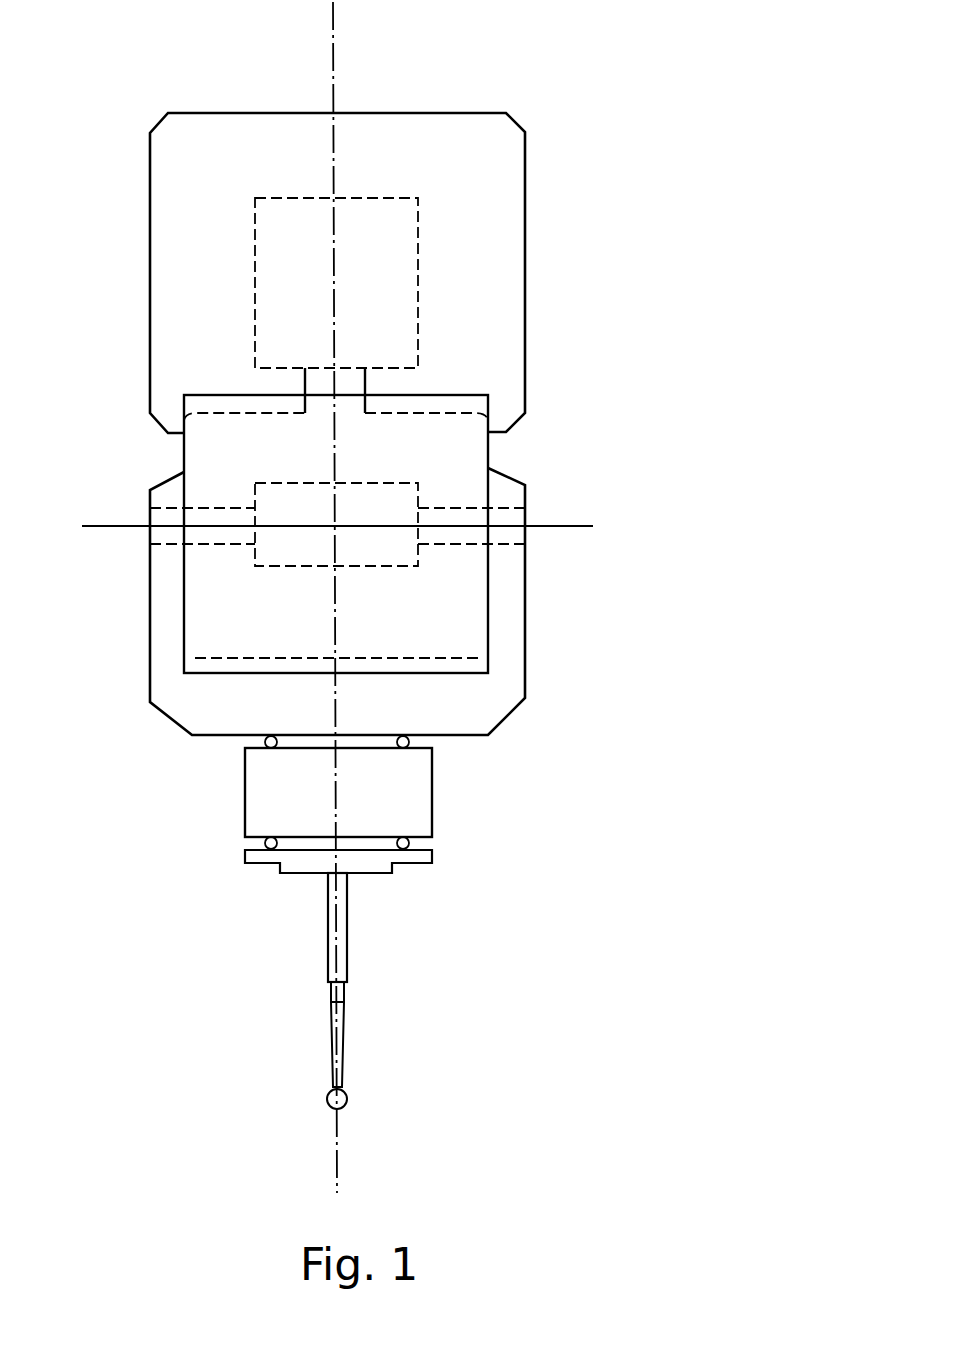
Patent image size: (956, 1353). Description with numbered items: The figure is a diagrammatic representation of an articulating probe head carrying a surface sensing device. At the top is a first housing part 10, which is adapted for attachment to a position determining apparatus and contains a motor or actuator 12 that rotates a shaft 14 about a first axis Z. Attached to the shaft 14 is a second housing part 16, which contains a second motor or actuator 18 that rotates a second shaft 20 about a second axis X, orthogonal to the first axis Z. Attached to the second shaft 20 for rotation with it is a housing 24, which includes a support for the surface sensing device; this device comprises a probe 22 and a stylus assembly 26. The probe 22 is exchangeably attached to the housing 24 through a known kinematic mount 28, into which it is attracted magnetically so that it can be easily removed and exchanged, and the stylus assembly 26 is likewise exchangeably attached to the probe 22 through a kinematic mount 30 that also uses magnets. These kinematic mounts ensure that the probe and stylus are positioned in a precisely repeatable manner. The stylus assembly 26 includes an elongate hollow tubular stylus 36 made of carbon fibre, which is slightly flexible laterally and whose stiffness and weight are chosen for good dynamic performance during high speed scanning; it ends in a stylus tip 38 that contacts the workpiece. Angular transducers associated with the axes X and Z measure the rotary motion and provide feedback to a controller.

The first housing part 10 is at (525, 225).
The motor or actuator 12 is at (403, 328).
The shaft 14 is at (365, 383).
The second housing part 16 is at (478, 453).
The second motor or actuator 18 is at (403, 562).
The second shaft 20 is at (518, 537).
The probe 22 is at (432, 798).
The housing 24 is at (525, 667).
The stylus assembly 26 is at (275, 911).
The kinematic mount 28 is at (262, 740).
The kinematic mount 30 is at (262, 843).
The stylus 36 is at (347, 930).
The stylus tip 38 is at (347, 1102).
The second axis X is at (552, 520).
The first axis Z is at (334, 83).